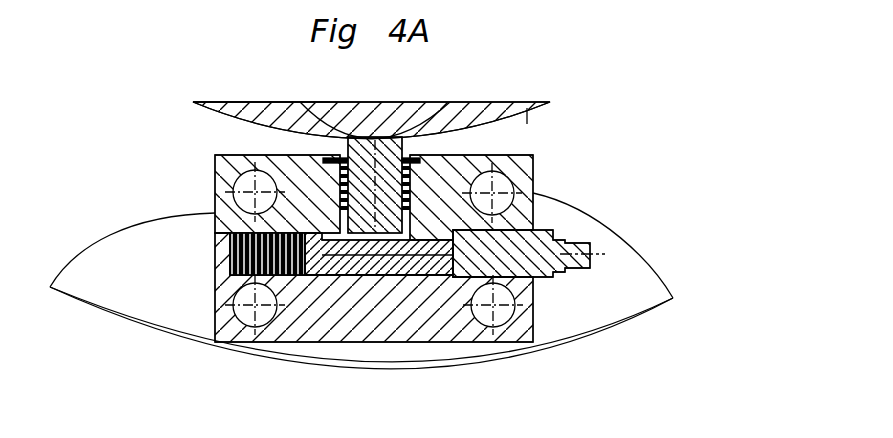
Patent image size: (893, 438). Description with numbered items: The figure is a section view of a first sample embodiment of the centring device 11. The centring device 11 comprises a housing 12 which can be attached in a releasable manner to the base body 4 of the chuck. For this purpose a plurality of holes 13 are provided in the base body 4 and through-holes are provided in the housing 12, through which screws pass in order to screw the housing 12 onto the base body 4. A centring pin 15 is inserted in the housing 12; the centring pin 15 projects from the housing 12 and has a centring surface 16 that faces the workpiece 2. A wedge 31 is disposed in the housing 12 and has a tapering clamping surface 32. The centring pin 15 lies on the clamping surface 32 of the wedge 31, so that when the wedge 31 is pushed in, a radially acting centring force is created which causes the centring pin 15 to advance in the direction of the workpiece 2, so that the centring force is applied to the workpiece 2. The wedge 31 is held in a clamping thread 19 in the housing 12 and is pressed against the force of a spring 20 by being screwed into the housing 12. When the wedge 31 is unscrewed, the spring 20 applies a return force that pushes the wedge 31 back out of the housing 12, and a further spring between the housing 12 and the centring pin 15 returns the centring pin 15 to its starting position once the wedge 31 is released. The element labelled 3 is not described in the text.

The workpiece 2 is at (330, 125).
The upper lens 3 is at (528, 108).
The base body 4 is at (597, 298).
The centring device 11 is at (672, 133).
The housing 12 is at (440, 327).
The holes 13 is at (262, 320).
The centring pin 15 is at (208, 103).
The centring surface 16 is at (420, 115).
The clamping thread 19 is at (533, 222).
The spring 20 is at (228, 240).
The wedge 31 is at (565, 253).
The clamping surface 32 is at (318, 228).